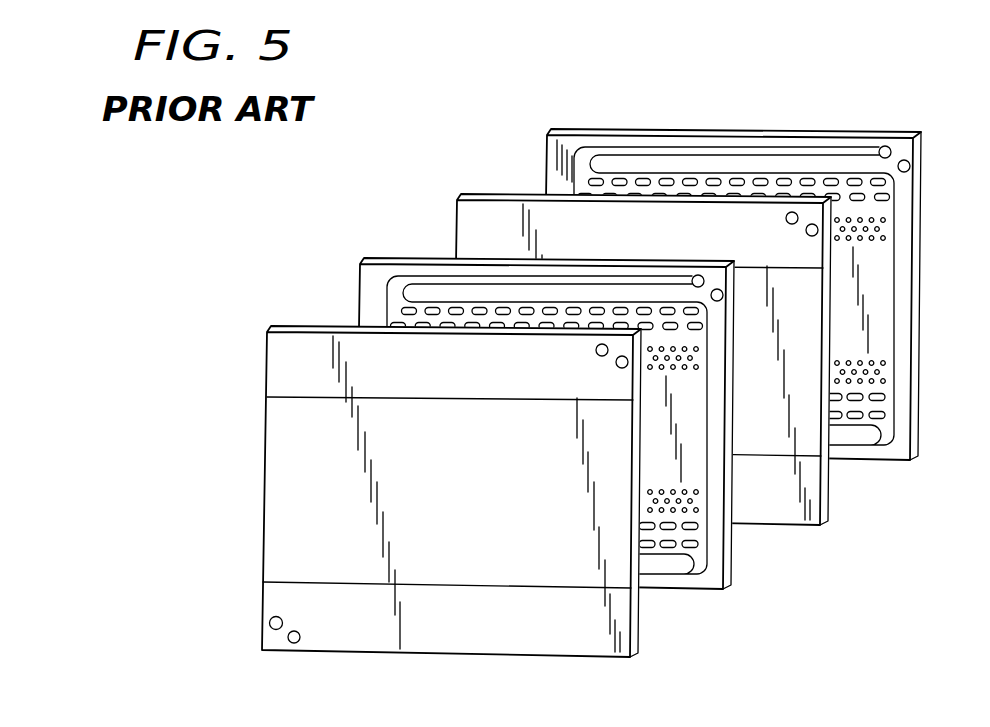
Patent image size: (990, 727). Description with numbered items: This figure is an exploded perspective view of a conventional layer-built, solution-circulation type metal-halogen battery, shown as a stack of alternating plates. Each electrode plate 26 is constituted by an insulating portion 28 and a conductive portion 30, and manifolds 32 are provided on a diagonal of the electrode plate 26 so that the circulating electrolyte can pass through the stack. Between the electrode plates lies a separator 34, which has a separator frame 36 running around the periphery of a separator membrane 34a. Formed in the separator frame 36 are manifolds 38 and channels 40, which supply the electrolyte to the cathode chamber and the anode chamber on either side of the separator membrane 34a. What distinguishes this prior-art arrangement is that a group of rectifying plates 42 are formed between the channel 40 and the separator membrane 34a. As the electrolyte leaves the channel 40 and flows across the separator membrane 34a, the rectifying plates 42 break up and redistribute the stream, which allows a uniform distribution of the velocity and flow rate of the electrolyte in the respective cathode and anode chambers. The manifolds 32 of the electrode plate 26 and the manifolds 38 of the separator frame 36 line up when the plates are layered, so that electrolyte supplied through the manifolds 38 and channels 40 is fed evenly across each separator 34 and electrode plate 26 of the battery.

The electrode plate 26 is at (252, 479).
The insulating portion 28 is at (500, 643).
The conductive portion 30 is at (440, 575).
The manifolds 32 is at (276, 630).
The separator 34 is at (352, 291).
The separator membrane 34a is at (688, 470).
The separator frame 36 is at (708, 568).
The manifolds 38 is at (712, 292).
The channels 40 is at (438, 282).
The rectifying plates 42 is at (537, 313).